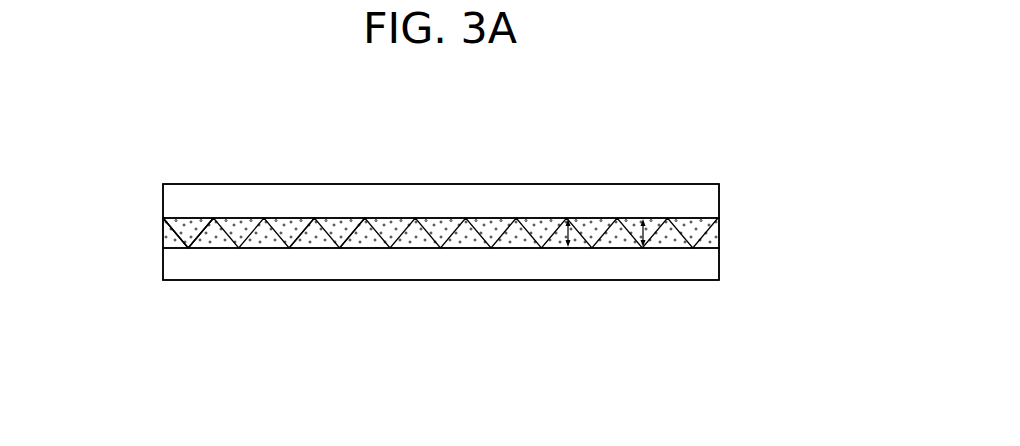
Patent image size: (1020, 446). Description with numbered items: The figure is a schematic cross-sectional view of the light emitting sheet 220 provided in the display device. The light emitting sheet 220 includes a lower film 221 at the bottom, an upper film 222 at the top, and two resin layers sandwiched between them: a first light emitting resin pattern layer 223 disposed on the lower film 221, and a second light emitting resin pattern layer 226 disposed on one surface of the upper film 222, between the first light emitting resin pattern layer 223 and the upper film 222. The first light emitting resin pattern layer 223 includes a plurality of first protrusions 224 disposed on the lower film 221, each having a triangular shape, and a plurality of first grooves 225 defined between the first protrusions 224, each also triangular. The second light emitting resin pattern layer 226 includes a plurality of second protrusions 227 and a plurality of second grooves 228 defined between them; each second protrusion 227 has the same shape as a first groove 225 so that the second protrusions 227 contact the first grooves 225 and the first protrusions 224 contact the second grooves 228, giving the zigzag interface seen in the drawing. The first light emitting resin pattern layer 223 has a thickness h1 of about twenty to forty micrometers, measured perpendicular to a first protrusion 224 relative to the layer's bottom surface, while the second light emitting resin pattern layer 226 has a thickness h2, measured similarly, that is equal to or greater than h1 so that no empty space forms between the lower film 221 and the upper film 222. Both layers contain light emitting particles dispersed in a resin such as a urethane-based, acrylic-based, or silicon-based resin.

The light emitting sheet 220 is at (716, 126).
The lower film 221 is at (705, 268).
The upper film 222 is at (705, 203).
The first light emitting resin pattern layer 223 is at (794, 220).
The first protrusions 224 is at (715, 242).
The first grooves 225 is at (715, 222).
The second light emitting resin pattern layer 226 is at (86, 218).
The second protrusions 227 is at (166, 224).
The second grooves 228 is at (213, 230).
The thickness of the first light emitting resin pattern layer h1 is at (565, 236).
The thickness of the second light emitting resin pattern layer h2 is at (634, 232).